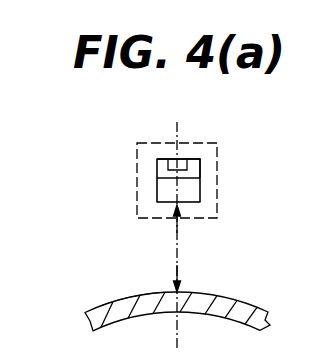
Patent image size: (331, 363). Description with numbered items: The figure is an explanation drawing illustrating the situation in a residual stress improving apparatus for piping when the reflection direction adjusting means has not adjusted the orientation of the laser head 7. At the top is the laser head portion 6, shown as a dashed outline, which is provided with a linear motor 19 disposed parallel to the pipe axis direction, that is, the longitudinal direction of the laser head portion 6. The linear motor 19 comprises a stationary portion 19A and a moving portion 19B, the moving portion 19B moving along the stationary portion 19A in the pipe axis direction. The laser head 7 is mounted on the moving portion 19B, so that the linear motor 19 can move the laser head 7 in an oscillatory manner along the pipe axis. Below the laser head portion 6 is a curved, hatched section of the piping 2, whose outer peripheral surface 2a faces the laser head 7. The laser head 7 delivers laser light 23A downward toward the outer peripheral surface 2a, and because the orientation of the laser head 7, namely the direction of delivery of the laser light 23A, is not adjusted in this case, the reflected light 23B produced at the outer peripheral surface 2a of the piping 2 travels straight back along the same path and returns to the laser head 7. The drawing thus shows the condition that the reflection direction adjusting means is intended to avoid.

The piping 2 is at (101, 307).
The outer peripheral surface 2a is at (133, 296).
The laser head portion 6 is at (137, 167).
The laser head 7 is at (157, 193).
The linear motor 19 is at (279, 112).
The stationary portion 19A is at (182, 160).
The moving portion 19B is at (200, 170).
The laser light 23A is at (183, 213).
The reflected light 23B is at (180, 288).